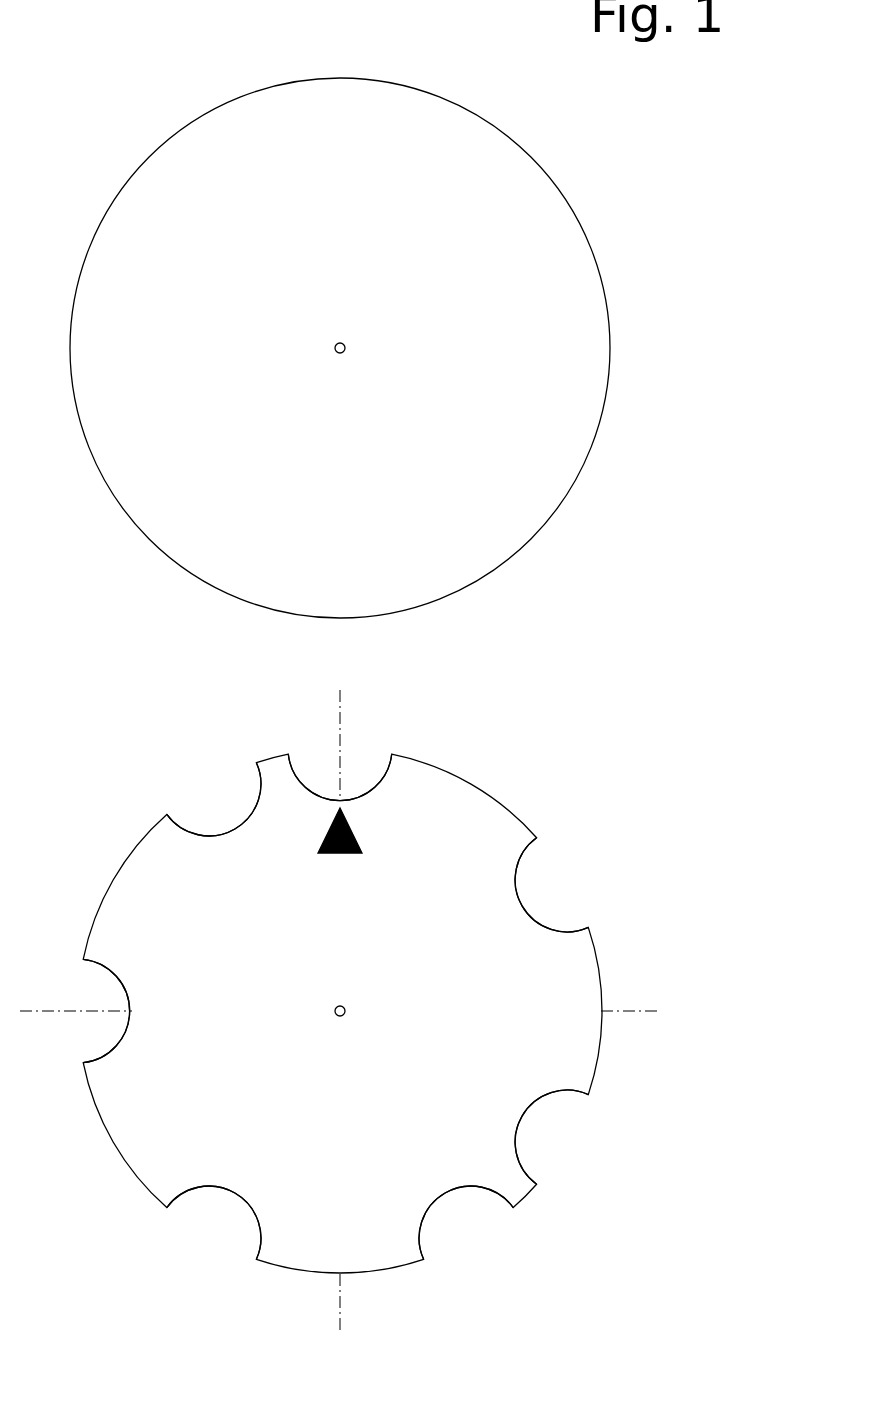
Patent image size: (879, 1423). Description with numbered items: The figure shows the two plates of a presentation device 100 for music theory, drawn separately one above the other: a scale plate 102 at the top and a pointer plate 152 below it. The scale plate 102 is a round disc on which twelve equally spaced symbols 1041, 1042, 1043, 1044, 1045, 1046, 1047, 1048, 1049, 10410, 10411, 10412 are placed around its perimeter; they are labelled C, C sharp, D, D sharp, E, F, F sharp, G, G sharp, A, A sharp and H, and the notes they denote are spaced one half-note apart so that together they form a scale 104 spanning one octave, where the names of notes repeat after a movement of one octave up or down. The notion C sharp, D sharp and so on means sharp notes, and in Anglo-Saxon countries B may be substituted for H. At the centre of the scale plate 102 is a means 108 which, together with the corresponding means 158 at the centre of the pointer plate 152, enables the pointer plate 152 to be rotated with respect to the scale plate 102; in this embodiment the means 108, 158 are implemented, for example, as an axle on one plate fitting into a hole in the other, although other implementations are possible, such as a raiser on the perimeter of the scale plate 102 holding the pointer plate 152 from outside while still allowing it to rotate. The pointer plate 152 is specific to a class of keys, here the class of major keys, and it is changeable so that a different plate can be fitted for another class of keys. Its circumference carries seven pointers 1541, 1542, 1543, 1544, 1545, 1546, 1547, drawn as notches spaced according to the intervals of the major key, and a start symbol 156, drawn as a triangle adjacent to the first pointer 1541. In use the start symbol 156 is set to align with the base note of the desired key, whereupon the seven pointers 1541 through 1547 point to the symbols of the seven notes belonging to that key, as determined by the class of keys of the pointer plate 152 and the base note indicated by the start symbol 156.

The presentation device 100 is at (90, 583).
The scale plate 102 is at (112, 202).
The scale 104 is at (328, 92).
The symbol 1041 is at (343, 118).
The symbol 1042 is at (458, 145).
The symbol 1043 is at (542, 232).
The symbol 1044 is at (573, 350).
The symbol 1045 is at (545, 468).
The symbol 1046 is at (458, 548).
The symbol 1047 is at (338, 578).
The symbol 1048 is at (225, 548).
The symbol 1049 is at (138, 462).
The symbol 10410 is at (105, 348).
The symbol 10411 is at (135, 228).
The symbol 10412 is at (222, 145).
The rotation means 108 is at (345, 355).
The pointer plate 152 is at (113, 878).
The pointer 1541 is at (378, 785).
The pointer 1542 is at (543, 929).
The pointer 1543 is at (527, 1100).
The pointer 1544 is at (452, 1192).
The pointer 1545 is at (235, 1192).
The pointer 1546 is at (128, 1013).
The pointer 1547 is at (215, 832).
The start symbol 156 is at (340, 860).
The rotation means 158 is at (345, 1018).